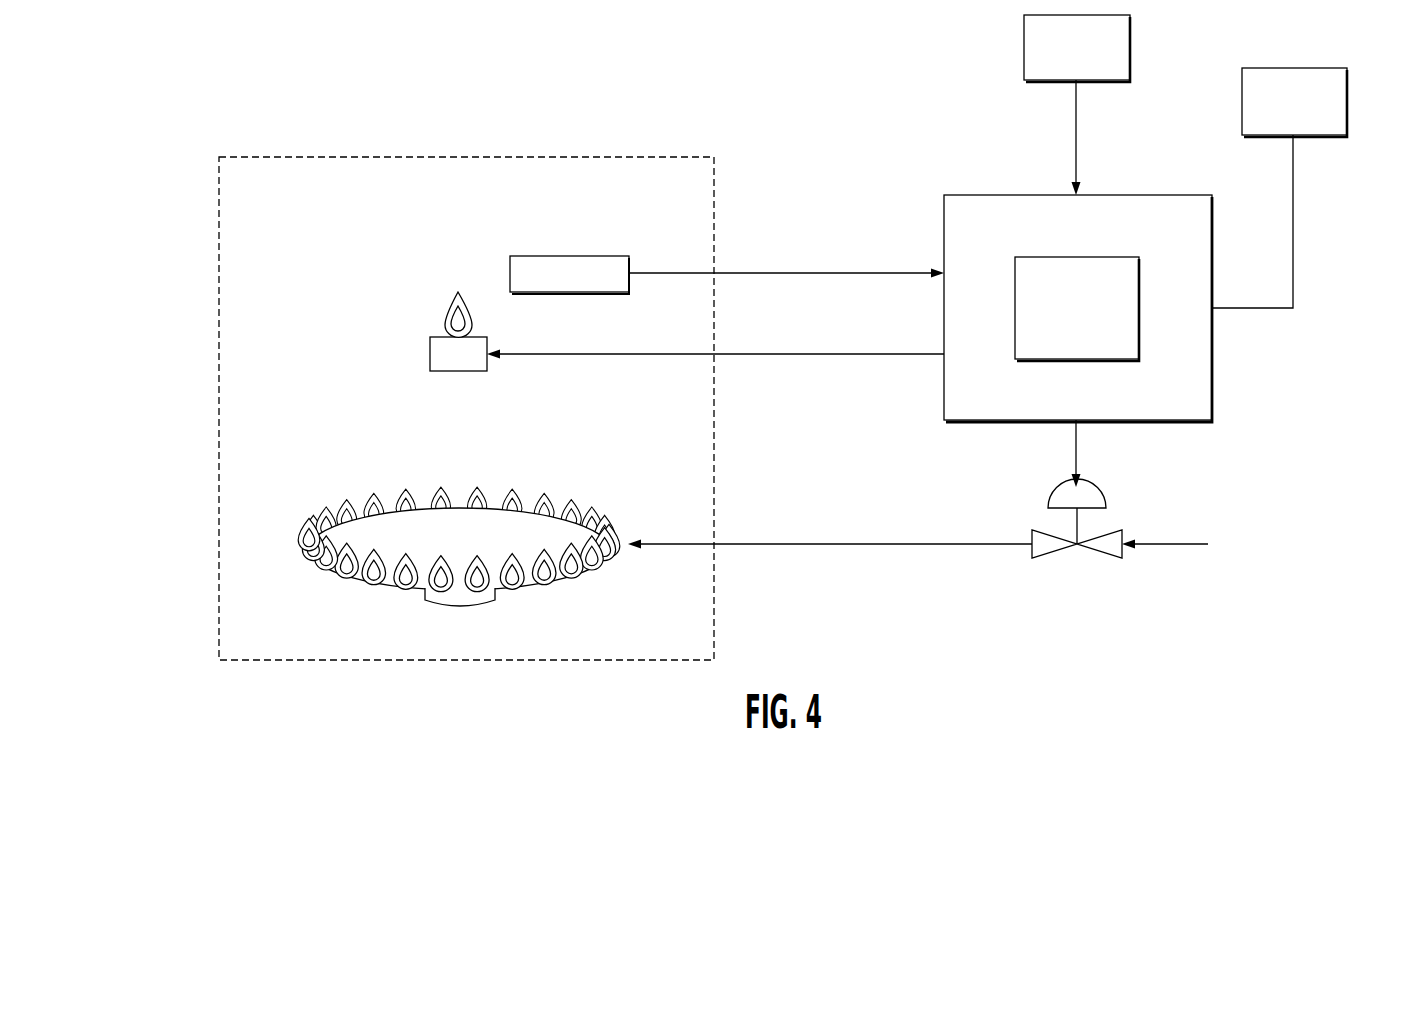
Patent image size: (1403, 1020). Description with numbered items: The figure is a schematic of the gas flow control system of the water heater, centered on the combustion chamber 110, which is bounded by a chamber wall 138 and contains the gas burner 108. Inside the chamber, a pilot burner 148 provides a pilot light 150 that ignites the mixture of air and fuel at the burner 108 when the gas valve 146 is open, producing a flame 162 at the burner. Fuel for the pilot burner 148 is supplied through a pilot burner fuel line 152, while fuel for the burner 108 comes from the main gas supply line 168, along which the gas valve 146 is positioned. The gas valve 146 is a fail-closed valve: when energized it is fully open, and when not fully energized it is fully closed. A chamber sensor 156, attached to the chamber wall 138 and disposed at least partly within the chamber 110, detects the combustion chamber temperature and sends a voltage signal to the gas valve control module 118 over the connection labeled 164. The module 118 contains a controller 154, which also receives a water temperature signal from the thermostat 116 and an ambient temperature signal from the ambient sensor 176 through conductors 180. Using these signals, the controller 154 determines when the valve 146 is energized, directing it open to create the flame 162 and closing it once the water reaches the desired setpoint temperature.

The gas burner 108 is at (446, 532).
The combustion chamber 110 is at (349, 171).
The thermostat 116 is at (1314, 113).
The gas valve control module 118 is at (1095, 244).
The chamber wall 138 is at (705, 185).
The gas valve 146 is at (1097, 552).
The pilot burner 148 is at (428, 351).
The pilot light 150 is at (446, 319).
The pilot burner fuel line 152 is at (787, 355).
The controller 154 is at (1095, 322).
The chamber sensor 156 is at (508, 265).
The flame 162 is at (313, 521).
The sensor signal 164 is at (787, 274).
The main gas supply line 168 is at (1173, 544).
The ambient sensor 176 is at (1097, 60).
The conductors 180 is at (1075, 138).